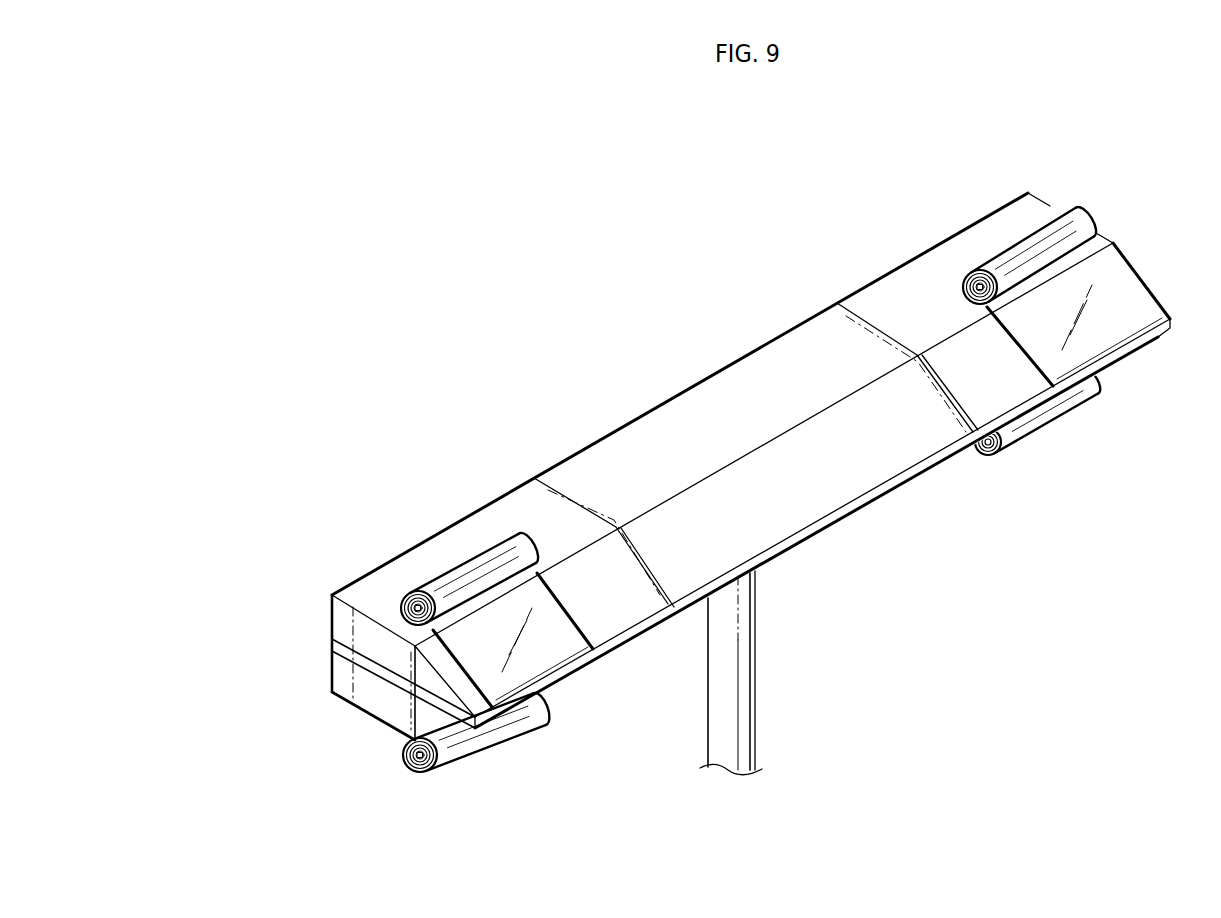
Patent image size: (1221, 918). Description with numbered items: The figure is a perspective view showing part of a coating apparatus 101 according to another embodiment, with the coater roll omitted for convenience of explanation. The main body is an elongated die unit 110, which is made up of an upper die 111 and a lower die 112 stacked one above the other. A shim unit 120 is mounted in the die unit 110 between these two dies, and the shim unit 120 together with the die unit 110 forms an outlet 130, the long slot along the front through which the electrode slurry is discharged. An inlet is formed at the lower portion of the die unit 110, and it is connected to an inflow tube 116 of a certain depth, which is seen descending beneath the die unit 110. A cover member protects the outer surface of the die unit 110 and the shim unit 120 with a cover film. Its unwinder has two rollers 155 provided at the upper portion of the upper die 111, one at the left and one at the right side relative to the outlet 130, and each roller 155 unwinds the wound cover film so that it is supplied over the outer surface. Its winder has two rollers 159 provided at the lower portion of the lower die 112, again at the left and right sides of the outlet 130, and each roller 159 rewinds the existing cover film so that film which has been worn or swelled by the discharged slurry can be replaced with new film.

The coating apparatus 101 is at (478, 249).
The die unit 110 is at (280, 609).
The upper die 111 is at (340, 622).
The lower die 112 is at (340, 668).
The inflow tube 116 is at (718, 662).
The shim unit 120 is at (383, 675).
The outlet 130 is at (798, 541).
The roller 155 is at (408, 594).
The roller 159 is at (420, 763).